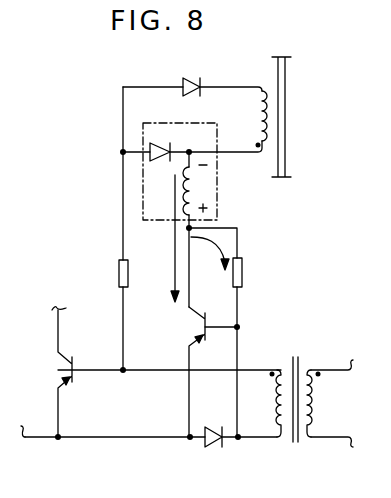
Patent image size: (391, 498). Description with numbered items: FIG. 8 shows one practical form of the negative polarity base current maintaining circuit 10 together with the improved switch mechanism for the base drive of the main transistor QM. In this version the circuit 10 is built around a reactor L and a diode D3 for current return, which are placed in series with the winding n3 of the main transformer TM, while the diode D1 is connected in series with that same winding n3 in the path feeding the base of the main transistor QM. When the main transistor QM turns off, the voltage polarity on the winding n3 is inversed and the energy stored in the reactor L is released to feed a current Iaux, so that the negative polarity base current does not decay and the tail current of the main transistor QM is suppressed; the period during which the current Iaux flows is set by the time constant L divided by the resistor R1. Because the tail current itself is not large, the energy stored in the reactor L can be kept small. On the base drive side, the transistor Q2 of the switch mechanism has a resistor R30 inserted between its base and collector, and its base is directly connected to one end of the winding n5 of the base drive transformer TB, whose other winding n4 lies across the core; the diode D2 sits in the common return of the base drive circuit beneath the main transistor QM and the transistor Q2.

The diode D1 is at (198, 79).
The diode for current return D3 is at (162, 142).
The winding n3 is at (258, 121).
The main transformer TM is at (286, 102).
The negative polarity base current maintaining circuit 10 is at (218, 189).
The reactor L is at (203, 188).
The current Iaux is at (155, 238).
The resistor R1 is at (119, 270).
The resistor R30 is at (243, 275).
The transistor Q2 is at (189, 327).
The main transistor QM is at (58, 369).
The diode D2 is at (213, 444).
The base drive transformer TB is at (296, 356).
The winding n5 is at (275, 396).
The winding n4 is at (318, 395).